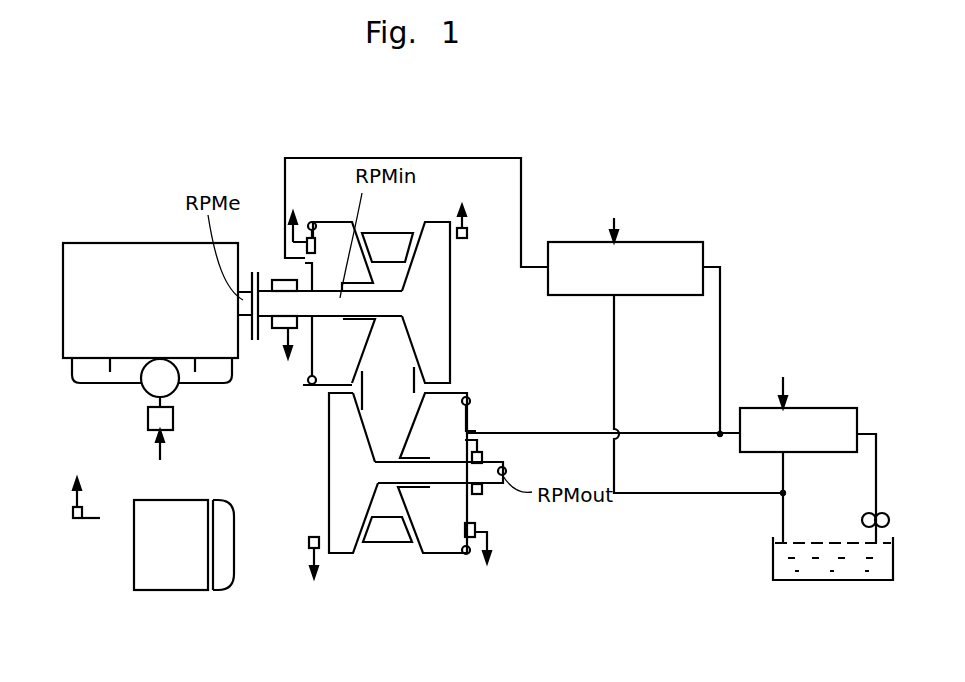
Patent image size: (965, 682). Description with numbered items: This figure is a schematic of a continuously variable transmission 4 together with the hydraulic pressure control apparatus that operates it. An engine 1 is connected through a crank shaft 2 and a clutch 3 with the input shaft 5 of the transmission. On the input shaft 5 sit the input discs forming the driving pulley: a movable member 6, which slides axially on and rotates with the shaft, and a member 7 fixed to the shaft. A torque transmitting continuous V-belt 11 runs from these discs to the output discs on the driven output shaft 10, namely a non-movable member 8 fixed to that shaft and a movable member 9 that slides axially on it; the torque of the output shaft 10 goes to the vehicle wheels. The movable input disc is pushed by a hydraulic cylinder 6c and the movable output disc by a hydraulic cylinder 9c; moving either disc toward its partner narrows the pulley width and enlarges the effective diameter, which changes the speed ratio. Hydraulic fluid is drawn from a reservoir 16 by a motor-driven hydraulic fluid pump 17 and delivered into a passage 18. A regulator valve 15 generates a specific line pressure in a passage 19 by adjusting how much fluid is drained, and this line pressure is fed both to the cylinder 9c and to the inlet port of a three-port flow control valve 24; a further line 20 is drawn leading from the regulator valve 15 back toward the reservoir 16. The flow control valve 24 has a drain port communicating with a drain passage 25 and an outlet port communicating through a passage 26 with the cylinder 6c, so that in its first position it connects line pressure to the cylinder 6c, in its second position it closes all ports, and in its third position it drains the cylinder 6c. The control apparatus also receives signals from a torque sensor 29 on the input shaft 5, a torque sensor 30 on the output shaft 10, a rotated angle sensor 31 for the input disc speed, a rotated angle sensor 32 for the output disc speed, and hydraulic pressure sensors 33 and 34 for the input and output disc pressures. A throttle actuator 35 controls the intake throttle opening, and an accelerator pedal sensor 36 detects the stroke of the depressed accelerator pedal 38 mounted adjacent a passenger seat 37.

The engine 1 is at (149, 262).
The crank shaft 2 is at (245, 291).
The clutch 3 is at (258, 341).
The continuously variable transmission 4 is at (388, 543).
The input shaft 5 is at (334, 297).
The movable member (input disc) 6 is at (326, 380).
The hydraulic cylinder (input disc) 6c is at (307, 252).
The fixed member (input disc) 7 is at (440, 331).
The non-movable member (output disc) 8 is at (345, 547).
The movable member (output disc) 9 is at (438, 543).
The hydraulic cylinder (output disc) 9c is at (453, 422).
The output shaft 10 is at (482, 475).
The V-belt 11 is at (387, 243).
The regulator valve 15 is at (825, 408).
The reservoir 16 is at (800, 583).
The hydraulic fluid pump 17 is at (890, 522).
The passage 18 is at (877, 478).
The passage 19 is at (728, 432).
The return line 20 is at (782, 467).
The flow control valve 24 is at (659, 241).
The drain passage 25 is at (617, 363).
The passage 26 is at (523, 187).
The torque sensor 29 is at (280, 280).
The torque sensor 30 is at (480, 452).
The rotated angle sensor 31 is at (470, 234).
The rotated angle sensor 32 is at (307, 542).
The hydraulic pressure sensor 33 is at (314, 225).
The hydraulic pressure sensor 34 is at (474, 538).
The throttle actuator 35 is at (152, 418).
The accelerator pedal sensor 36 is at (73, 514).
The passenger seat 37 is at (177, 570).
The accelerator pedal 38 is at (100, 527).